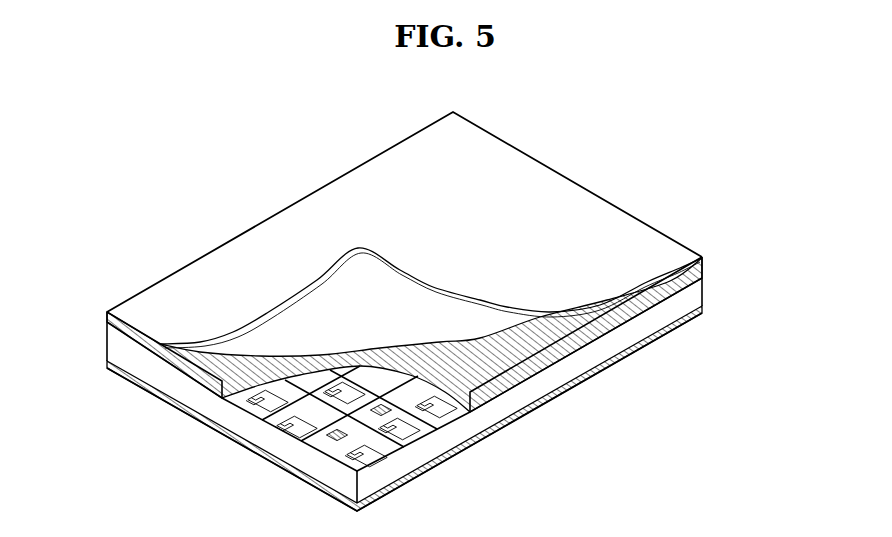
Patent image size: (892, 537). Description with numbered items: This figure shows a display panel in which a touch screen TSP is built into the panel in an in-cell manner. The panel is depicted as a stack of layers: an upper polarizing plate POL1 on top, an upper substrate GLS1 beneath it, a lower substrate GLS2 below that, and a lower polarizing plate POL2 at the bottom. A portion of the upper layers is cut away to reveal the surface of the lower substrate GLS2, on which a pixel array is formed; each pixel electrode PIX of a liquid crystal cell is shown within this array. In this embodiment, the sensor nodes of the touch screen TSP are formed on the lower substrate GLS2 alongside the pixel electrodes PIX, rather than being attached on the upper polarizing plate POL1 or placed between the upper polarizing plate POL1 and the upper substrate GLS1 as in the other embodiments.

The upper polarizing plate POL1 is at (703, 258).
The upper substrate GLS1 is at (703, 272).
The lower substrate GLS2 is at (697, 292).
The lower polarizing plate POL2 is at (702, 312).
The touch screen TSP is at (325, 444).
The pixel electrode PIX is at (358, 466).